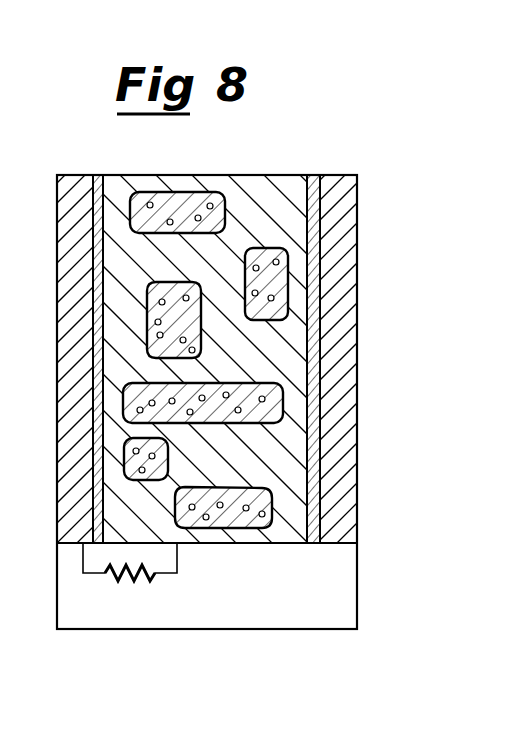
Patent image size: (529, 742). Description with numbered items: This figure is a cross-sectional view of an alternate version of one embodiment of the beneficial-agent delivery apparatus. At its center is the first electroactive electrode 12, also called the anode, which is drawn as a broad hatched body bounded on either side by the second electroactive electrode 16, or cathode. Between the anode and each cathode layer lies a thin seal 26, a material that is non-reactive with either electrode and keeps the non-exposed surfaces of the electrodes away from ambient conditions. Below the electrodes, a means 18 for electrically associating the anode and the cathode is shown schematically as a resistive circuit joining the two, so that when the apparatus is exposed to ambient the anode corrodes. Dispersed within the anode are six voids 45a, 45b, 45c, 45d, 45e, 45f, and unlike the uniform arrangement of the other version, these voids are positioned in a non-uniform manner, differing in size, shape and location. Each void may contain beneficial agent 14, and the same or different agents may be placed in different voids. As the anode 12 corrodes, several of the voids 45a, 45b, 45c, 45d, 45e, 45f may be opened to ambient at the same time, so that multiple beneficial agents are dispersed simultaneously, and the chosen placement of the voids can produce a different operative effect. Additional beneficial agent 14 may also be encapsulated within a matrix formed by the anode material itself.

The first electroactive electrode 12 is at (243, 174).
The beneficial agent 14 is at (198, 192).
The second electroactive electrode 16 is at (357, 253).
The seal 26 is at (98, 176).
The void 45a is at (134, 206).
The void 45b is at (286, 290).
The void 45c is at (150, 309).
The void 45d is at (284, 402).
The void 45e is at (128, 462).
The void 45f is at (272, 500).
The means for electrically associating the anode and the cathode 18 is at (93, 587).